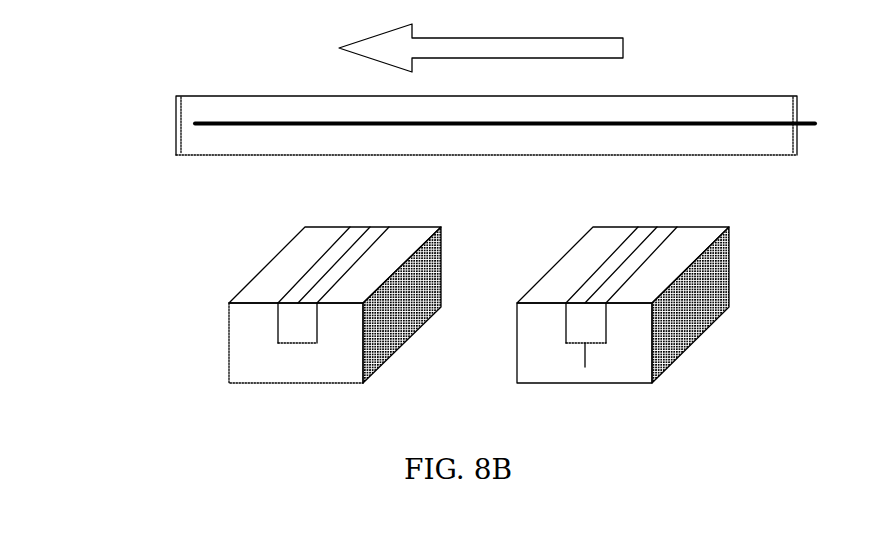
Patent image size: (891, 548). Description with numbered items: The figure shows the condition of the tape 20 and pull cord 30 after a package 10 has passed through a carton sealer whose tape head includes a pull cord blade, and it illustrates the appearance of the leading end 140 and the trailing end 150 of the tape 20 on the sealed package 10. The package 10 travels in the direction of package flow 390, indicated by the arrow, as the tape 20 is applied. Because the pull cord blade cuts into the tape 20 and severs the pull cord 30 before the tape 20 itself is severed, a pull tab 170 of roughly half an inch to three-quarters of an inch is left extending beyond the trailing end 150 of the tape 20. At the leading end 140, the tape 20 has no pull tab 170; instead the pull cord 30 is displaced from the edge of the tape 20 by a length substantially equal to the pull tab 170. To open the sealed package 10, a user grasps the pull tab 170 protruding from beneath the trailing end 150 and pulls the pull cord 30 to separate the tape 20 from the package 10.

The package 10 is at (383, 362).
The tape 20 is at (740, 155).
The pull cord 30 is at (417, 125).
The leading end 140 is at (175, 114).
The trailing end 150 is at (800, 143).
The pull tab 170 is at (806, 121).
The direction of package flow 390 is at (623, 48).